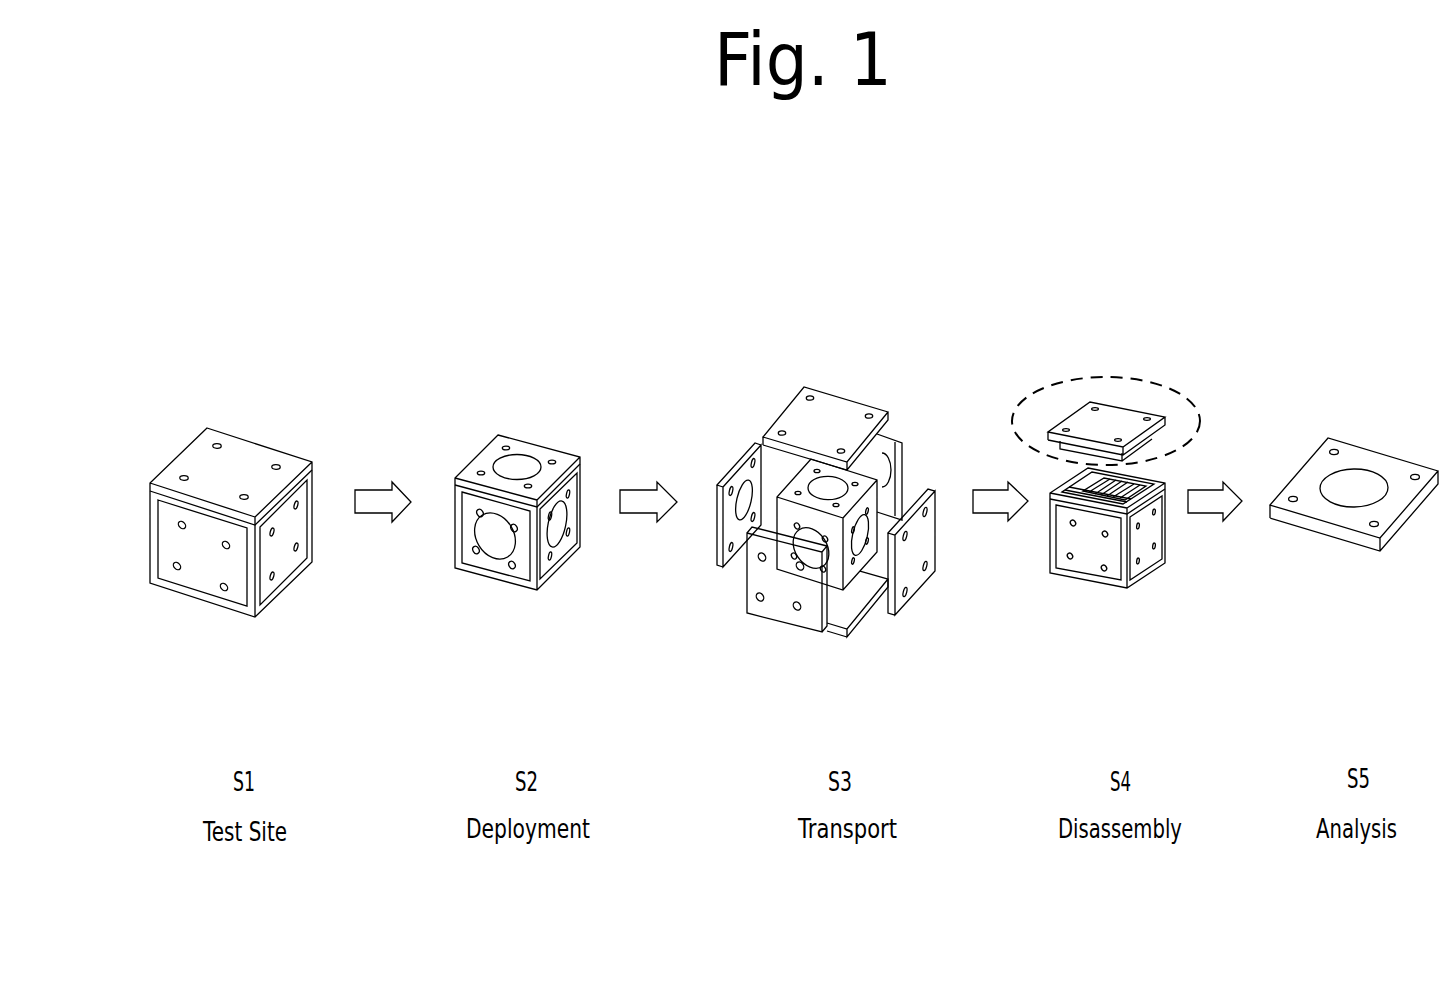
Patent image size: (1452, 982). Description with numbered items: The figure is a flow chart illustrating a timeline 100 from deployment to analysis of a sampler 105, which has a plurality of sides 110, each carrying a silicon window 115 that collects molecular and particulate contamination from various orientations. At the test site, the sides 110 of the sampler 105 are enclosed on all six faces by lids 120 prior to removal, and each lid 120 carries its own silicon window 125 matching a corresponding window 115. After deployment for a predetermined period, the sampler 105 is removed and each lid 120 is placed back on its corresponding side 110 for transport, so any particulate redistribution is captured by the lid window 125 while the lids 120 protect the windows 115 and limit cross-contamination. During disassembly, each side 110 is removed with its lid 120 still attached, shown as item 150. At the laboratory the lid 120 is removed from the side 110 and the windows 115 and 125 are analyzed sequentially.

The timeline 100 is at (315, 171).
The sampler 105 is at (461, 420).
The side 110 is at (1318, 452).
The silicon window 115 is at (498, 545).
The lid 120 is at (155, 512).
The silicon window 125 is at (743, 497).
The side with lid attached 150 is at (1118, 378).